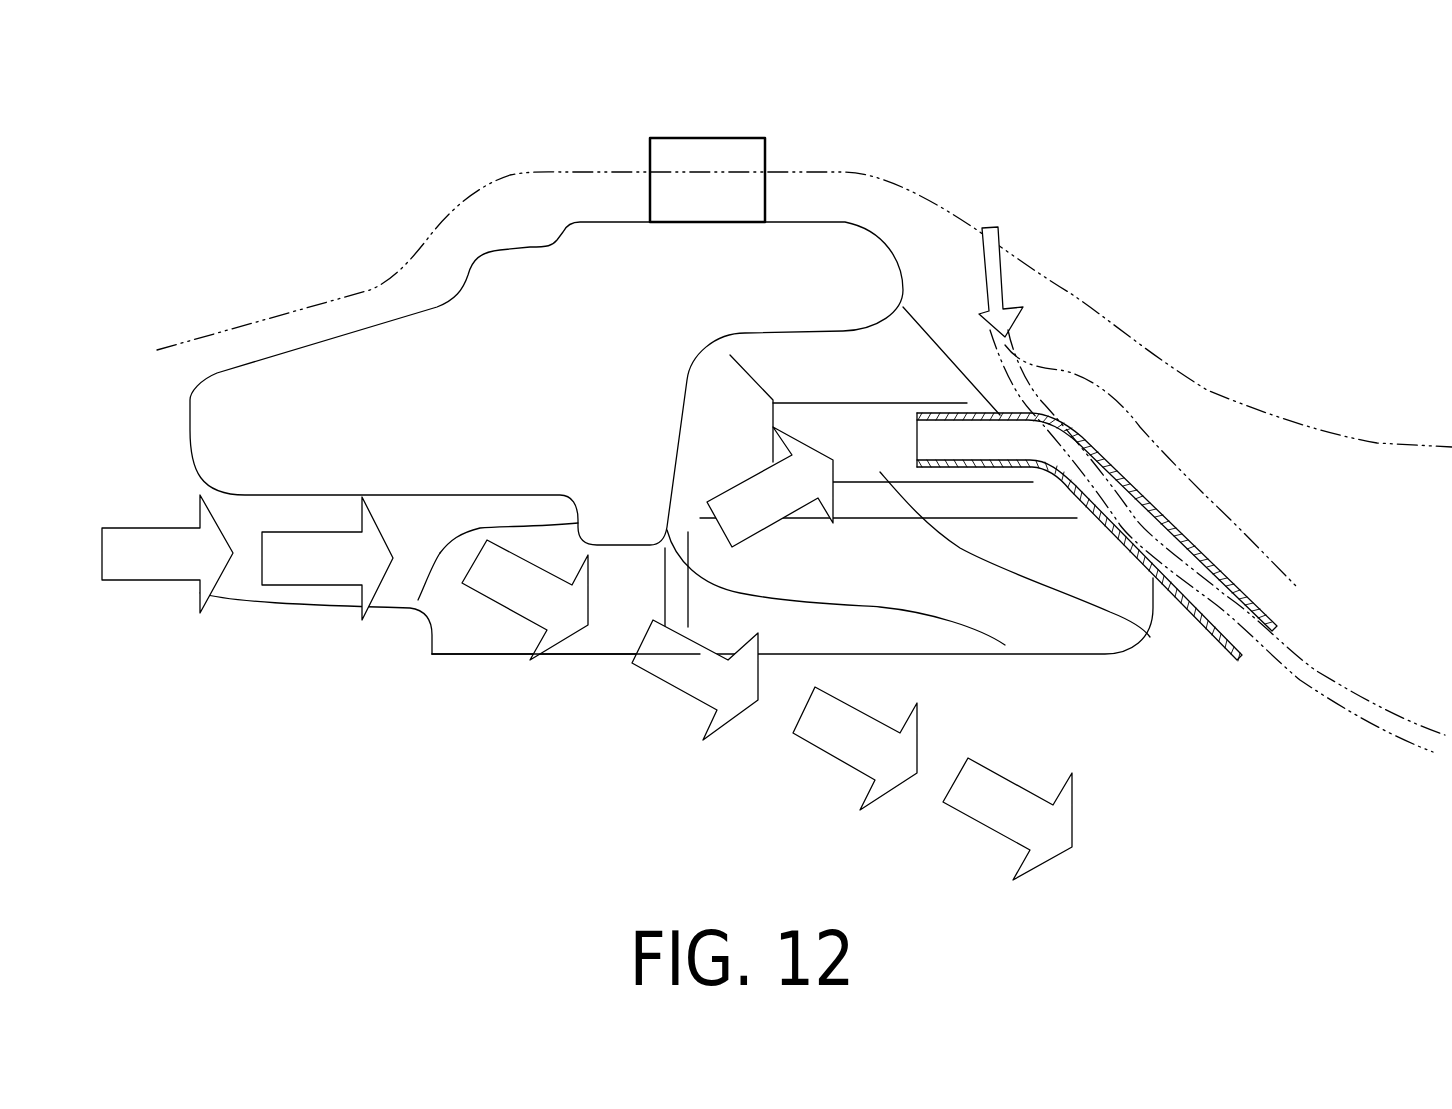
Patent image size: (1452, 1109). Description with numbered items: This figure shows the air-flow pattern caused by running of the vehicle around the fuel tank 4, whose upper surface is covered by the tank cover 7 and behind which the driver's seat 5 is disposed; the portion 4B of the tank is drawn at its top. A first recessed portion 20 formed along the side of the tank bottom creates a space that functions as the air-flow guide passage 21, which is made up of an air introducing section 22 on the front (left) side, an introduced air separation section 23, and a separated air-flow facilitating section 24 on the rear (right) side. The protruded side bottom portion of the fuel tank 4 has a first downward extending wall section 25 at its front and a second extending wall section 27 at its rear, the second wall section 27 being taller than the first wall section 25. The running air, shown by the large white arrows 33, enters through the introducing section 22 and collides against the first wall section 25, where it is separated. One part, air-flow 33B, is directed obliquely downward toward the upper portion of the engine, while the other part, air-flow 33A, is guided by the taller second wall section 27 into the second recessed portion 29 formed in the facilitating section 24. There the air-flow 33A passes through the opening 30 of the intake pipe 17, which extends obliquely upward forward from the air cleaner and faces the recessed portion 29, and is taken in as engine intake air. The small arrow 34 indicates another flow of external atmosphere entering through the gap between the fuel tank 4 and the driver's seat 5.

The fuel tank 4 is at (530, 247).
The housing upper portion 4B is at (712, 138).
The driver's seat 5 is at (1373, 447).
The tank cover 7 is at (437, 233).
The intake pipe 17 is at (1140, 487).
The first recessed portion 20 is at (485, 617).
The air-flow guide passage 21 is at (662, 332).
The air introducing section 22 is at (477, 511).
The introduced air separation section 23 is at (625, 568).
The separated air-flow facilitating section 24 is at (751, 410).
The first downward extending wall section 25 is at (418, 600).
The second extending wall section 27 is at (1005, 645).
The second recessed portion 29 is at (1150, 637).
The opening 30 is at (917, 440).
The air-flow 33 is at (123, 580).
The air-flow 33A is at (757, 523).
The air-flow 33B is at (668, 680).
The small arrow 34 is at (1003, 230).